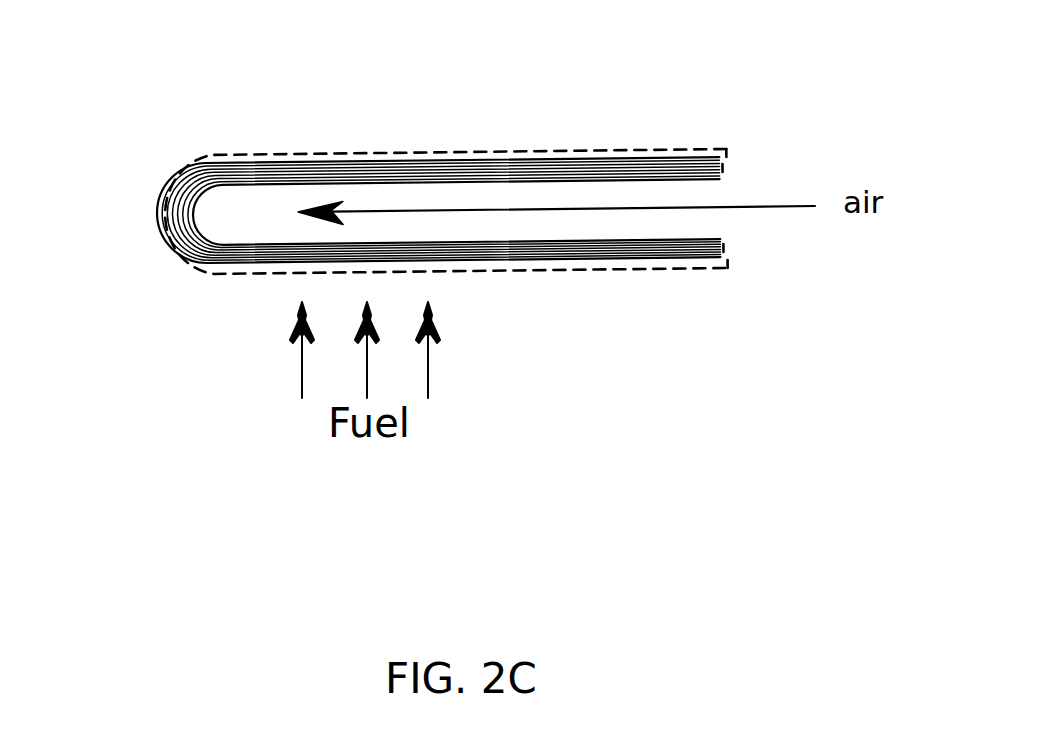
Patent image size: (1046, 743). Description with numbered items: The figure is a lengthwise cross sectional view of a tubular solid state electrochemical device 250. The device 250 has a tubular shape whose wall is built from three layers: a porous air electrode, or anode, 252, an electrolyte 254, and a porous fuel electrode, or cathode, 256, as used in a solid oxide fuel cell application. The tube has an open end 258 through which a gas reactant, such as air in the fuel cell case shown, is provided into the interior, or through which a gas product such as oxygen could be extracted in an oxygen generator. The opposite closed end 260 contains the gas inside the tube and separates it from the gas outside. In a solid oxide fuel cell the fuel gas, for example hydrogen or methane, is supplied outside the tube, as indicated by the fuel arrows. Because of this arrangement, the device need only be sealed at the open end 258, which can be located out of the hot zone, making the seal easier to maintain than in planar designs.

The device 250 is at (482, 172).
The porous air electrode (anode) 252 is at (282, 158).
The electrolyte 254 is at (375, 161).
The porous fuel electrode (cathode) 256 is at (473, 152).
The open end 258 is at (710, 193).
The closed end 260 is at (142, 211).